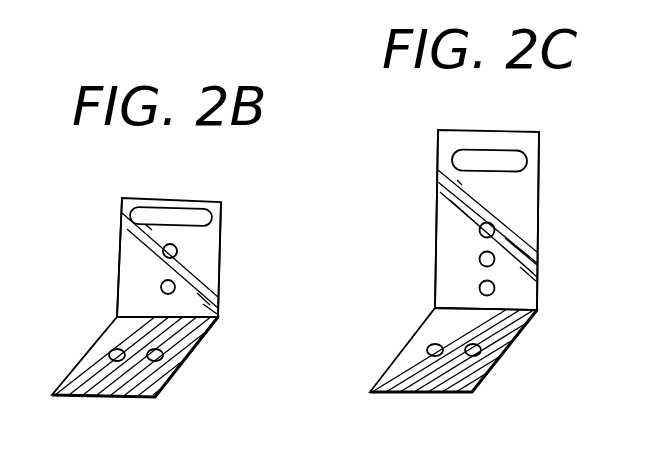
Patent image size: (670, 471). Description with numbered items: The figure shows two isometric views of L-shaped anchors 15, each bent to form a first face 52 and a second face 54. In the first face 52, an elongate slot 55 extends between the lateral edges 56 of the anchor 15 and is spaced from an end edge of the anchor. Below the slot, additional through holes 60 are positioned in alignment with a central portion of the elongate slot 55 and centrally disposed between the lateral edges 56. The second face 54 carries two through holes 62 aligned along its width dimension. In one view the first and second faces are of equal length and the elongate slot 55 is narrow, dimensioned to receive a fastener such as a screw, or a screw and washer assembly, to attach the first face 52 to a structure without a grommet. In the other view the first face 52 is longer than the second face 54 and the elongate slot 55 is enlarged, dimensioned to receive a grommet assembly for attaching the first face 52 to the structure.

In FIG. 2B, the anchor 15 is at (100, 202).
In FIG. 2C, the anchor 15 is at (418, 147).
In FIG. 2B, the first face 52 is at (208, 243).
In FIG. 2C, the first face 52 is at (520, 200).
In FIG. 2B, the second face 54 is at (177, 347).
In FIG. 2C, the second face 54 is at (470, 370).
In FIG. 2B, the elongate slot 55 is at (173, 215).
In FIG. 2C, the elongate slot 55 is at (488, 156).
In FIG. 2B, the lateral edges 56 is at (118, 257).
In FIG. 2C, the lateral edges 56 is at (437, 252).
In FIG. 2B, the through holes 60 is at (175, 287).
In FIG. 2C, the through holes 60 is at (486, 257).
In FIG. 2B, the through holes 62 is at (153, 353).
In FIG. 2C, the through holes 62 is at (436, 349).